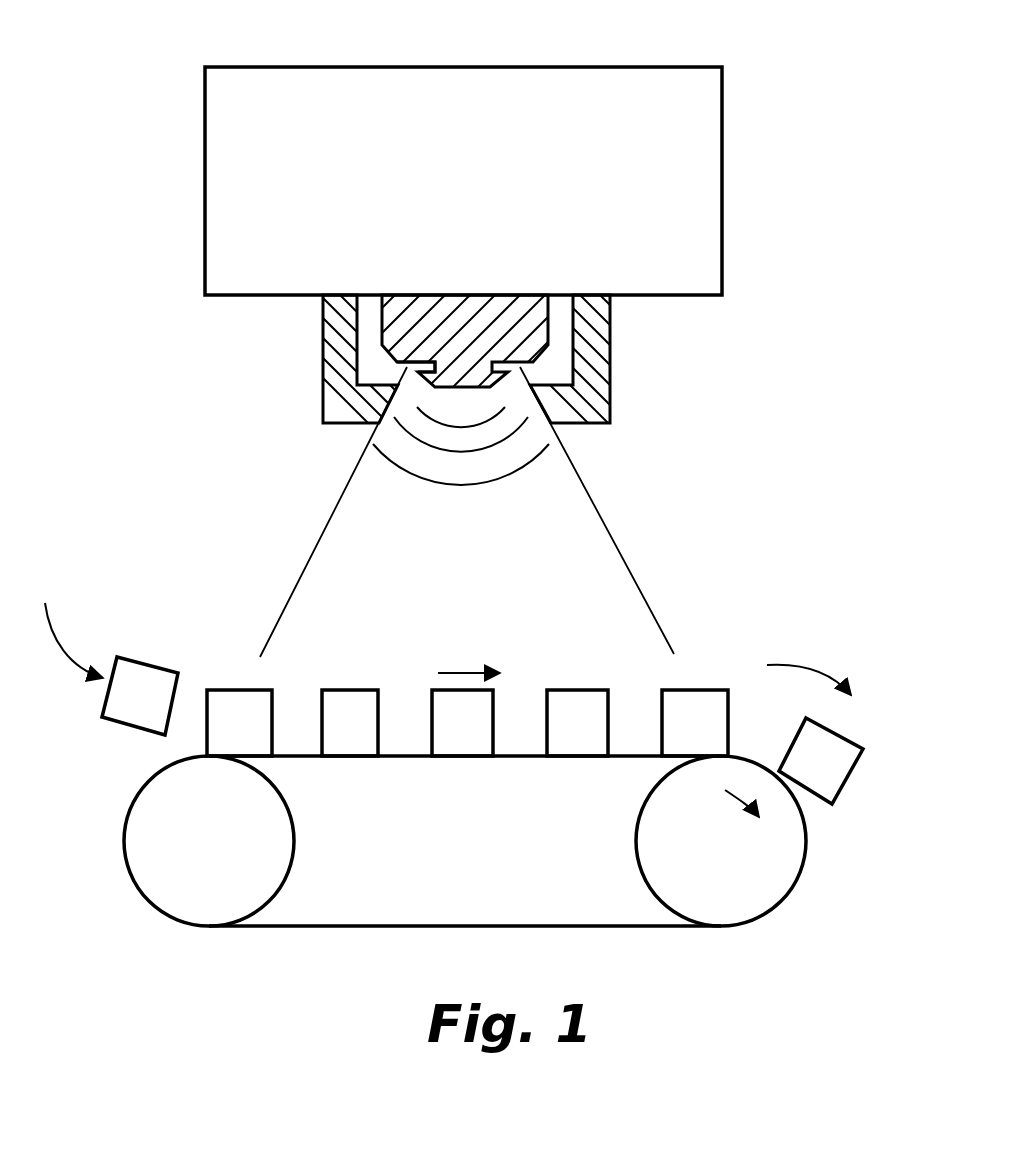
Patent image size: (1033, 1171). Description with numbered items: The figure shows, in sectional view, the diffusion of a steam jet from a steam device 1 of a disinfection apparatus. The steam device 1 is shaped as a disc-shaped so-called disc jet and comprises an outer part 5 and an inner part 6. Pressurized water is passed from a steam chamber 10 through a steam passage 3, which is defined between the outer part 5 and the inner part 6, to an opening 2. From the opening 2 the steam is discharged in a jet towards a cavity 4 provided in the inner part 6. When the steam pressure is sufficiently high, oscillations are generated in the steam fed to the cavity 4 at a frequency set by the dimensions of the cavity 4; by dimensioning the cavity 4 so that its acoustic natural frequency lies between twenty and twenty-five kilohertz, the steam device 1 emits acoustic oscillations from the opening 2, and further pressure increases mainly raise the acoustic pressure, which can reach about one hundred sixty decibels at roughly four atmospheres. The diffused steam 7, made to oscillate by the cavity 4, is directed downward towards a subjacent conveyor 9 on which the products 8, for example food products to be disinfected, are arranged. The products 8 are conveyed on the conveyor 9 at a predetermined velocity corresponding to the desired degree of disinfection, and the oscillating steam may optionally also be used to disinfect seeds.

The steam device 1 is at (485, 336).
The opening 2 is at (407, 367).
The steam passage 3 is at (365, 292).
The cavity 4 is at (413, 368).
The outer part 5 is at (592, 320).
The inner part 6 is at (457, 318).
The diffused steam 7 is at (616, 527).
The products 8 is at (362, 690).
The conveyor 9 is at (141, 782).
The steam chamber 10 is at (226, 163).